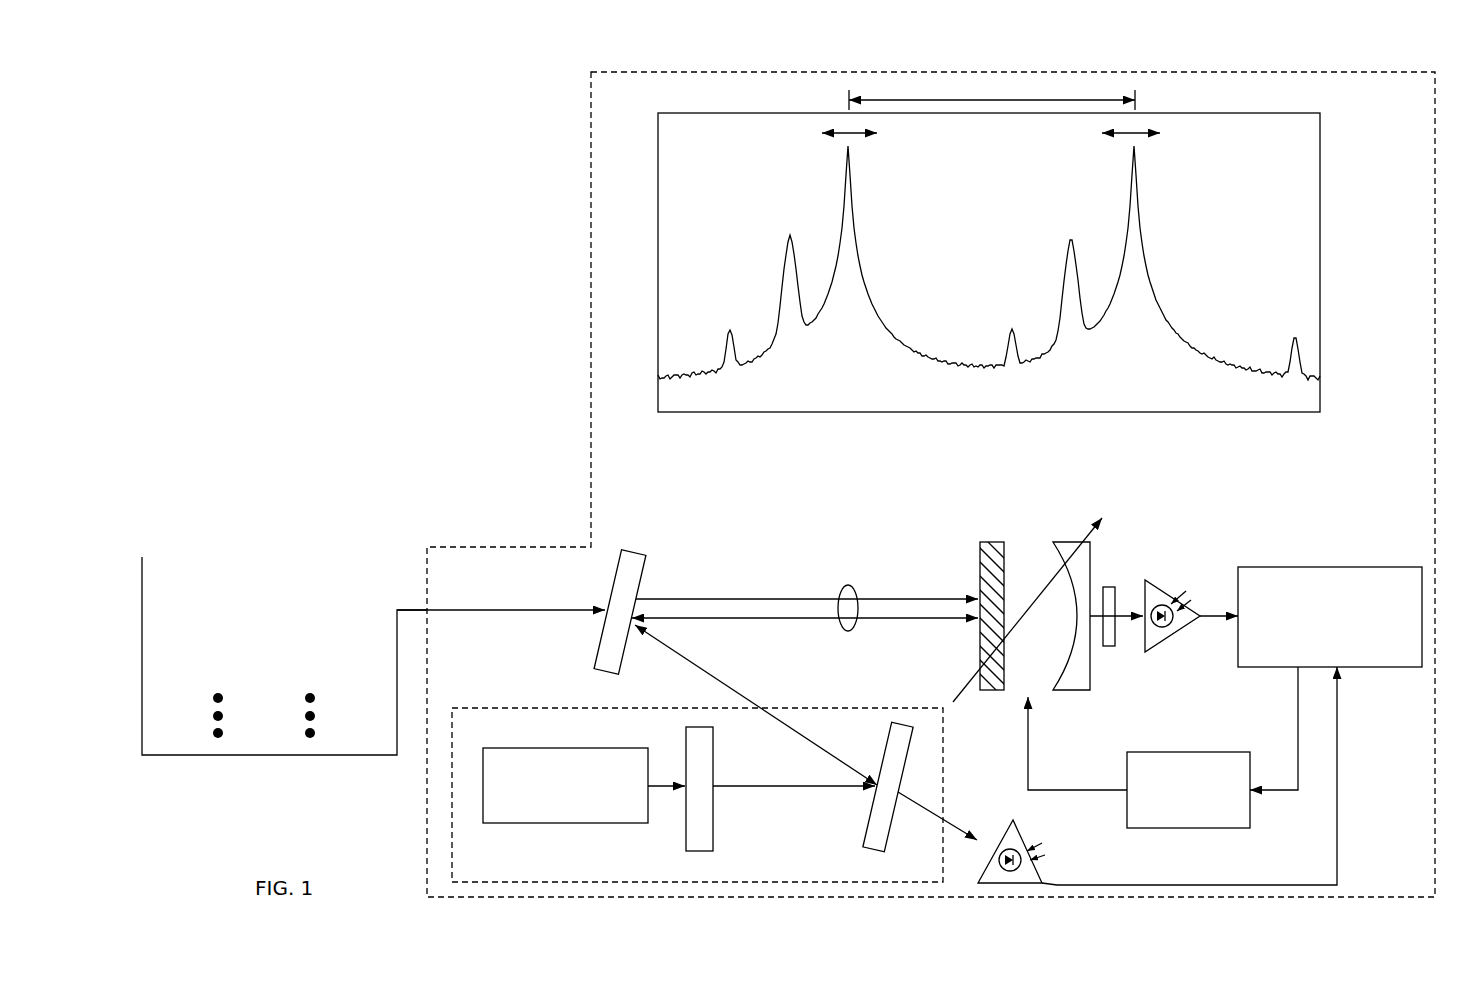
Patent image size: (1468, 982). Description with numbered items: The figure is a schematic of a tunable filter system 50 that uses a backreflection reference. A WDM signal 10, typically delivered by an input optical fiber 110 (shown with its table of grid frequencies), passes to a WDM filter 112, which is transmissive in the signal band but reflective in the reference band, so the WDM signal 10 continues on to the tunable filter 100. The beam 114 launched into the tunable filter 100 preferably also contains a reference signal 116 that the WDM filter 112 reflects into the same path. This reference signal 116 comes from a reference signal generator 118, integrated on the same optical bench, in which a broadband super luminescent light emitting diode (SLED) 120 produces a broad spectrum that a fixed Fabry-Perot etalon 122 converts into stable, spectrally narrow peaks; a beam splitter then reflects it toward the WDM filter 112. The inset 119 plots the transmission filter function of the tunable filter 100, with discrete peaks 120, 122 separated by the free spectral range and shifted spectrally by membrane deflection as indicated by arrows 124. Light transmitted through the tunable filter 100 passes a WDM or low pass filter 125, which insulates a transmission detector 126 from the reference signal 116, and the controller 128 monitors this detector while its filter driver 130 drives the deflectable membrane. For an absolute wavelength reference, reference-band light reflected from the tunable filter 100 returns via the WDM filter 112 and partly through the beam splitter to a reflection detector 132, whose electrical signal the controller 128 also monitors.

The WDM signal 10 is at (357, 437).
The tunable filter system 50 is at (590, 358).
The tunable filter 100 is at (985, 545).
The input optical fiber 110 is at (146, 700).
The WDM filter 112 is at (640, 553).
The beam 114 is at (850, 585).
The reference signal 116 is at (735, 620).
The reference signal generator 118 is at (482, 705).
The etalon transmission spectrum 119 is at (1322, 350).
The broadband super luminescent light emitting diode (SLED) 120 is at (560, 748).
The fixed Fabry Perot etalon/filter 122 is at (715, 838).
The arrows 124 is at (832, 128).
The WDM or low pass filter 125 is at (1108, 650).
The transmission detector 126 is at (1150, 580).
The controller 128 is at (1268, 565).
The filter driver 130 is at (1175, 752).
The reflection detector 132 is at (1020, 835).